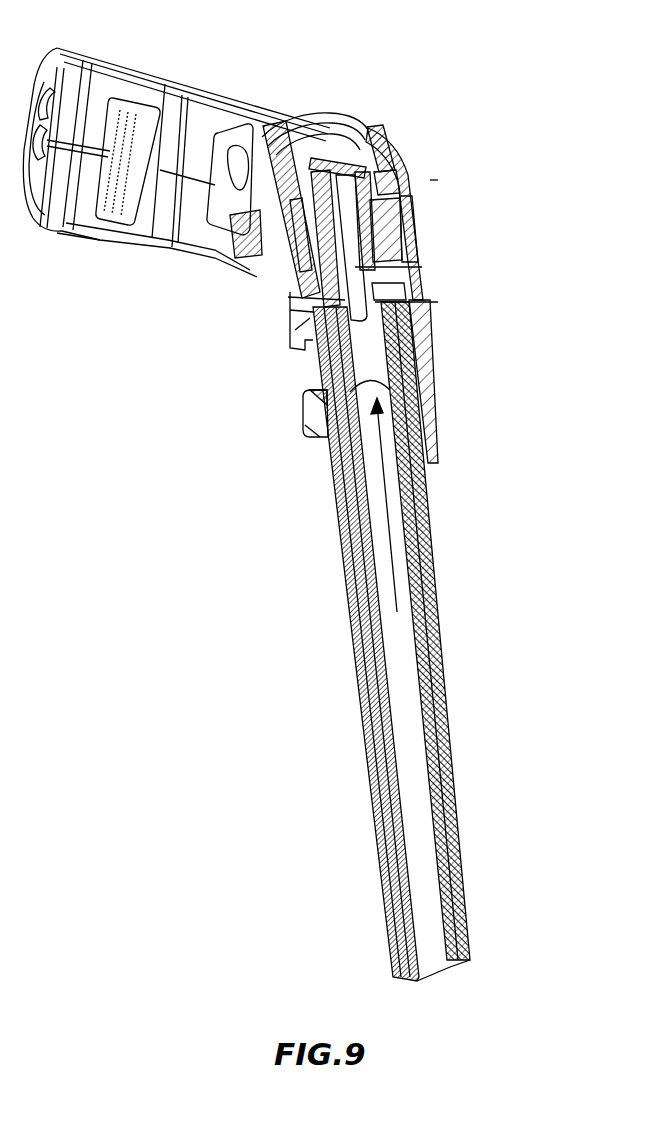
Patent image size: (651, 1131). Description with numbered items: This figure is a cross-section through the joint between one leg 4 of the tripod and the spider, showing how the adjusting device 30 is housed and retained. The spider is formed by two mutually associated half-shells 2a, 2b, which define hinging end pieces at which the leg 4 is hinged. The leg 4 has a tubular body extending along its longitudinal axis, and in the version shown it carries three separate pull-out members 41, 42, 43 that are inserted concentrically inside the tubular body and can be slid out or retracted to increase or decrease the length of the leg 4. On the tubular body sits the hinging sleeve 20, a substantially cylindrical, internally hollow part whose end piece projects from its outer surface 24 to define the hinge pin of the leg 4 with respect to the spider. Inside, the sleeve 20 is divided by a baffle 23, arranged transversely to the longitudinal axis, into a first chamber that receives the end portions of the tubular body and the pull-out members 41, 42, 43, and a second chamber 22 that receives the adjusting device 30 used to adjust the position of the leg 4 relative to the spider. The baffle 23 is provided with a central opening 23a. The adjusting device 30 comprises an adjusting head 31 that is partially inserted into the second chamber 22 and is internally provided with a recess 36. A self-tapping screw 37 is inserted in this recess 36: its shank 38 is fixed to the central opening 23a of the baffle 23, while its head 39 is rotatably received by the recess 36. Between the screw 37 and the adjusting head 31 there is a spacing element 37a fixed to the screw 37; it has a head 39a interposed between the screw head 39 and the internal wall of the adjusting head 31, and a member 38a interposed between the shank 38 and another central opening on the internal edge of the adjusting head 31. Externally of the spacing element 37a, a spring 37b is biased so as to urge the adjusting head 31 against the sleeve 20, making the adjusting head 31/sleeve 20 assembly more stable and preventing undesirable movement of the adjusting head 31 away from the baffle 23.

The half-shell 2a is at (218, 98).
The half-shell 2b is at (177, 223).
The leg 4 is at (433, 570).
The hinging sleeve 20 is at (438, 254).
The second chamber 22 is at (274, 340).
The baffle 23 is at (412, 315).
The central opening 23a is at (283, 362).
The outer surface 24 is at (427, 293).
The adjusting device 30 is at (413, 176).
The adjusting head 31 is at (388, 135).
The recess 36 is at (352, 128).
The self-tapping screw 37 is at (295, 292).
The spacing element 37a is at (450, 183).
The spring 37b is at (412, 204).
The shank 38 is at (420, 268).
The member 38a is at (305, 265).
The head 39 is at (330, 128).
The head 39a is at (402, 152).
The pull-out member 41 is at (268, 340).
The pull-out member 42 is at (428, 515).
The pull-out member 43 is at (433, 588).